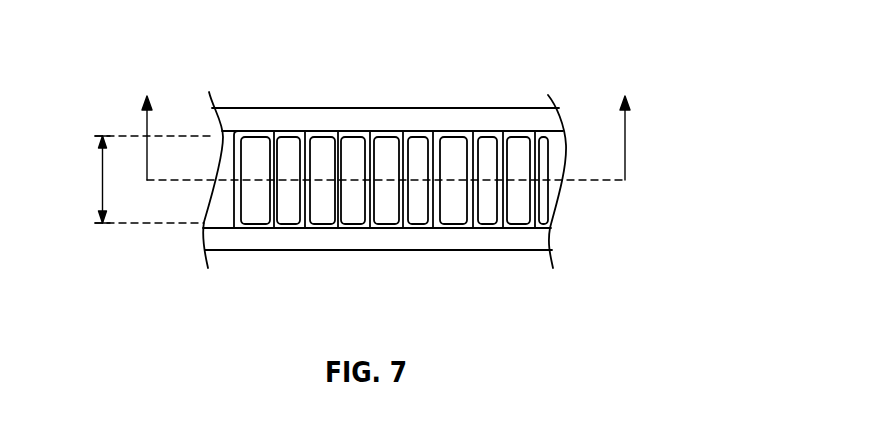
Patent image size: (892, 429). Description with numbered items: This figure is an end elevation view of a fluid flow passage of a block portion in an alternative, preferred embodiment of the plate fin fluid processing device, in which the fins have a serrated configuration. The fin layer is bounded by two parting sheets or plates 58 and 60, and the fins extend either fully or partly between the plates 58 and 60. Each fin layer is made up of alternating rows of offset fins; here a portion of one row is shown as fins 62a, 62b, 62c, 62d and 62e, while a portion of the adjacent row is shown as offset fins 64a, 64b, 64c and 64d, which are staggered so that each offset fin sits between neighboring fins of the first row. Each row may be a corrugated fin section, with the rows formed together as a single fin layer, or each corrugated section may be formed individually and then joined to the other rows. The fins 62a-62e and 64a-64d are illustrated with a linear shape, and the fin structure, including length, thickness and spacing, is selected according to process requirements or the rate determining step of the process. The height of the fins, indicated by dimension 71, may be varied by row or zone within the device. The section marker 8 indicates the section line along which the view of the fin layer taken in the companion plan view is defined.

The parting sheet or plate 58 is at (543, 118).
The parting sheet or plate 60 is at (515, 238).
The fin 62a is at (234, 138).
The fin 62b is at (300, 145).
The fin 62c is at (365, 142).
The fin 62d is at (429, 145).
The fin 62e is at (497, 140).
The offset fin 64a is at (266, 212).
The offset fin 64b is at (328, 212).
The offset fin 64c is at (393, 210).
The offset fin 64d is at (460, 210).
The height of the fins 71 is at (100, 178).
The section line for FIG. 8 is at (386, 124).